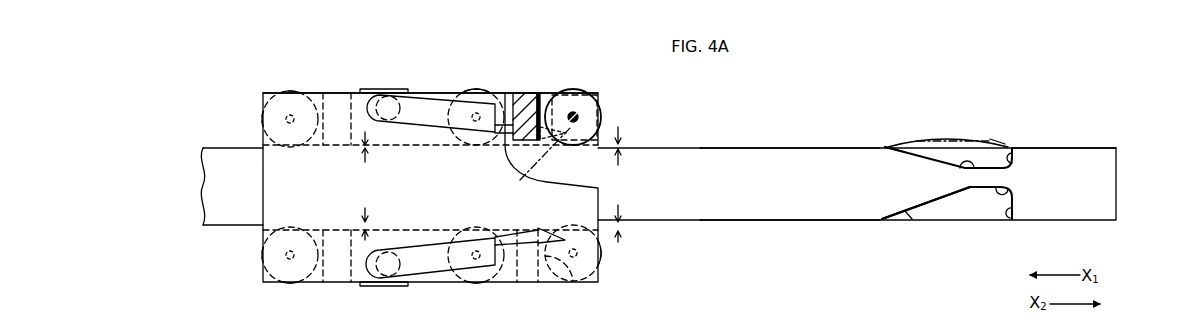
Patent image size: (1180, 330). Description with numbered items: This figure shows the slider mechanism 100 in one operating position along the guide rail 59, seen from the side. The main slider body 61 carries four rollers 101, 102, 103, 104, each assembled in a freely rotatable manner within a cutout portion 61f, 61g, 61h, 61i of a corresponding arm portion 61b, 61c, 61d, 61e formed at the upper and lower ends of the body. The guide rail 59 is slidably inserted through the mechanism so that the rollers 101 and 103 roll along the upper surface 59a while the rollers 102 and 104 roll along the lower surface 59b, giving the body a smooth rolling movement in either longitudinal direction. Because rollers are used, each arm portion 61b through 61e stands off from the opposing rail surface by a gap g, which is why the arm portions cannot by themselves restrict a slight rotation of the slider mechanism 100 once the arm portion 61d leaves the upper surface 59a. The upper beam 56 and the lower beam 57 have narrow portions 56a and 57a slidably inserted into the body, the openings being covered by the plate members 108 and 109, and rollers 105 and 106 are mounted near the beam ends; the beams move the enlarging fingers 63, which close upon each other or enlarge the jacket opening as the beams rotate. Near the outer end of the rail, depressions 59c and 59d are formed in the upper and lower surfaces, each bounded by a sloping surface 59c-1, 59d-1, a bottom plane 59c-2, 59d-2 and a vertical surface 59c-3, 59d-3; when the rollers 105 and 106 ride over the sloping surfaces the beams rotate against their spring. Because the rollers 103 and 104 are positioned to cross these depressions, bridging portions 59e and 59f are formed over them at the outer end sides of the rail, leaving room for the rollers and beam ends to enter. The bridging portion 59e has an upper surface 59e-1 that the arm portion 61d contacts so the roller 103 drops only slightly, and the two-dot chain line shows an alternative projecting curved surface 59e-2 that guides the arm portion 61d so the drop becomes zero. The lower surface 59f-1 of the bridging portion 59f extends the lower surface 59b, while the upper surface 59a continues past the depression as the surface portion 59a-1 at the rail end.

The main slider body 61 is at (263, 156).
The upper arm portion 61b is at (347, 93).
The lower arm portion 61c is at (348, 283).
The upper arm portion 61d is at (521, 93).
The lower arm portion 61e is at (521, 283).
The cutout portion 61f is at (325, 98).
The cutout portion 61g is at (321, 283).
The cutout portion 61h is at (548, 95).
The cutout portion 61i is at (549, 283).
The upper beam 56 is at (430, 106).
The narrow portion of upper beam 56a is at (394, 97).
The lower beam 57 is at (430, 268).
The narrow portion of lower beam 57a is at (383, 282).
The guide rail 59 is at (753, 144).
The upper surface of guide rail 59a is at (815, 146).
The upper surface end portion 59a-1 is at (1070, 146).
The lower surface of guide rail 59b is at (760, 221).
The depression 59c is at (965, 145).
The sloping surface 59c-1 is at (906, 147).
The bottom portion plane 59c-2 is at (963, 166).
The vertical surface 59c-3 is at (1013, 158).
The depression 59d is at (980, 221).
The sloping surface 59d-1 is at (910, 212).
The lower notch corner 59d-2 is at (1009, 189).
The vertical surface 59d-3 is at (1010, 219).
The bridging portion 59e is at (937, 139).
The upper surface of bridging portion 59e-1 is at (990, 139).
The projecting curved surface 59e-2 is at (950, 136).
The bridging portion 59f is at (956, 220).
The lower surface of bridging portion 59f-1 is at (927, 212).
The enlarging fingers 63 is at (528, 230).
The slider mechanism 100 is at (508, 88).
The roller 101 is at (288, 91).
The roller 102 is at (284, 283).
The roller 103 is at (600, 114).
The roller 104 is at (601, 250).
The roller 105 is at (476, 91).
The roller 106 is at (477, 284).
The plate member 108 is at (379, 88).
The plate member 109 is at (376, 287).
The gap g is at (368, 150).